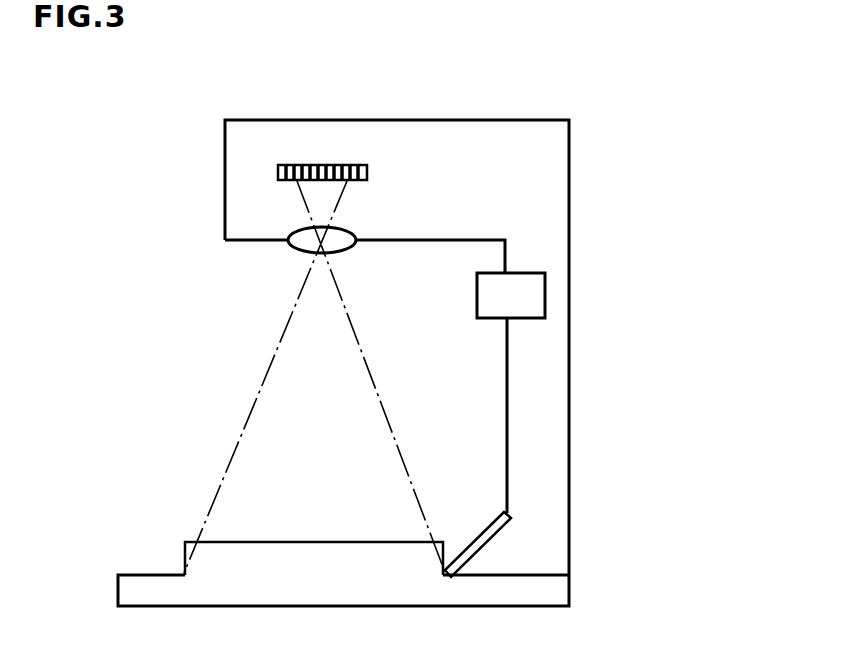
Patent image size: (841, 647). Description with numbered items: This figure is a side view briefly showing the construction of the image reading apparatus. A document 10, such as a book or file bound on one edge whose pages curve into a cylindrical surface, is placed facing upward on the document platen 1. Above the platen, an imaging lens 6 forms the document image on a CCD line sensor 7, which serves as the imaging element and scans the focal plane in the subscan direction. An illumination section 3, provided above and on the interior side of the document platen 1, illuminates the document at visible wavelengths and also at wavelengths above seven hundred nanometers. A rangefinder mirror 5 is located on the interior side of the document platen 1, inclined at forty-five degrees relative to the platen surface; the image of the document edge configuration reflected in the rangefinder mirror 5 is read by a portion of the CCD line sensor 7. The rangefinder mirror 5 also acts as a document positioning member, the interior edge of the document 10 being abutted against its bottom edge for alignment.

The document platen 1 is at (142, 575).
The illumination section 3 is at (530, 288).
The rangefinder mirror 5 is at (478, 532).
The imaging lens 6 is at (300, 251).
The CCD line sensor 7 is at (345, 165).
The document 10 is at (360, 542).